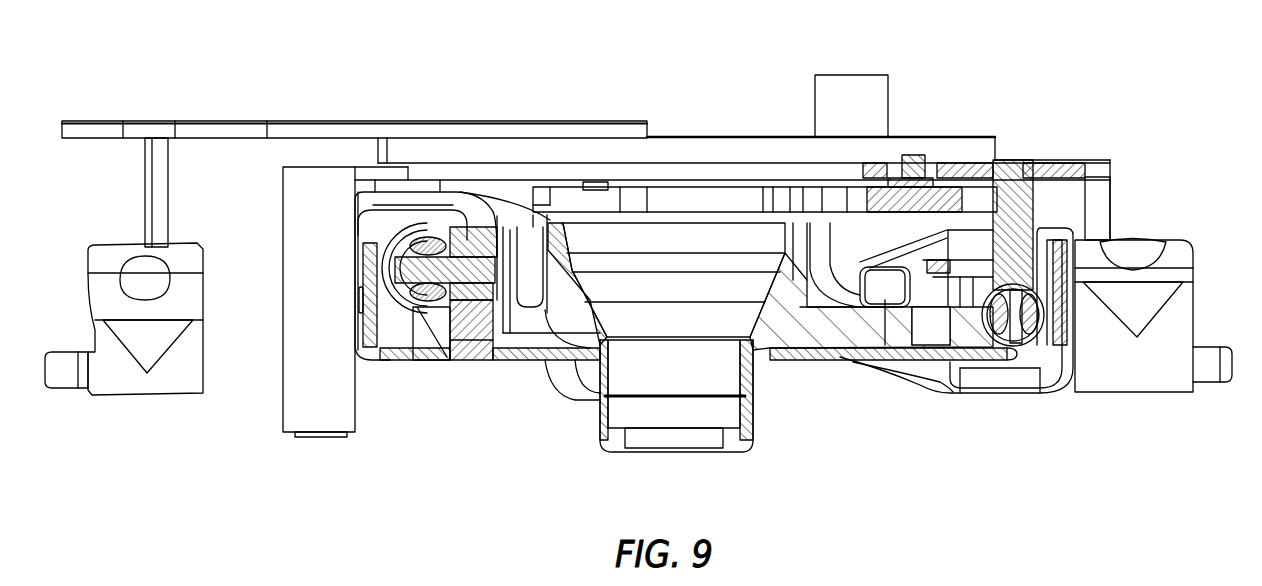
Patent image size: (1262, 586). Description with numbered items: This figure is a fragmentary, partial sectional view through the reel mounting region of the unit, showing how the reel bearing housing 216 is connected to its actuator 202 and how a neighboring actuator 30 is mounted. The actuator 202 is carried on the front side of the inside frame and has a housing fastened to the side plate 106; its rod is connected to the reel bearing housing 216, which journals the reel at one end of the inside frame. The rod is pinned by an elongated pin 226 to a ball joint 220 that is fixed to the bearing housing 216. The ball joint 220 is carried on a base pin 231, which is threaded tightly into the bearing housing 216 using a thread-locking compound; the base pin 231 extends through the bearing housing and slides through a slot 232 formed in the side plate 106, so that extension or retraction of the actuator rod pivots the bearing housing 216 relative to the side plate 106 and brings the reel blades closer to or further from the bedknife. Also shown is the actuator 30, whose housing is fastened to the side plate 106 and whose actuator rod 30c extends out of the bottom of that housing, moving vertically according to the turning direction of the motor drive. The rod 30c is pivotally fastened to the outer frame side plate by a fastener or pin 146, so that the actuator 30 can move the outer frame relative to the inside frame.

The actuator 202 is at (408, 190).
The reel bearing housing 216 is at (818, 257).
The fastener or pin 146 is at (1063, 230).
The actuator 30 is at (1066, 228).
The actuator rod 30c is at (1028, 345).
The elongated pin 226 is at (408, 270).
The ball joint 220 is at (447, 362).
The base pin 231 is at (477, 360).
The slot 232 is at (462, 362).
The side plate 106 is at (547, 363).